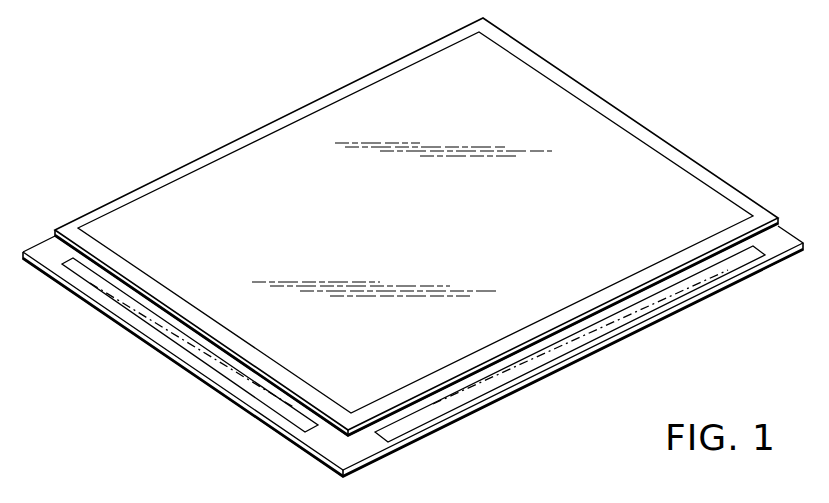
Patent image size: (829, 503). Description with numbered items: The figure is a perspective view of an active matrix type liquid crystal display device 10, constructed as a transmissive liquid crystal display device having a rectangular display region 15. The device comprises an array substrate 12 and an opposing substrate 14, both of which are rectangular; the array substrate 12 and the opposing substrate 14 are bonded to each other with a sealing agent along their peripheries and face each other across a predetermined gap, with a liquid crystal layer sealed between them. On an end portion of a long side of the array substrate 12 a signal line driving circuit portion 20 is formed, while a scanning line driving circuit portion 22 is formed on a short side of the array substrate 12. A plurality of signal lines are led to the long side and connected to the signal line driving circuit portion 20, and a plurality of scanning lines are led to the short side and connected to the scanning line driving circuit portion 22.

The active matrix type liquid crystal display device 10 is at (413, 258).
The array substrate 12 is at (336, 448).
The opposing substrate 14 is at (168, 185).
The display region 15 is at (565, 90).
The signal line driving circuit portion 20 is at (487, 384).
The scanning line driving circuit portion 22 is at (137, 310).